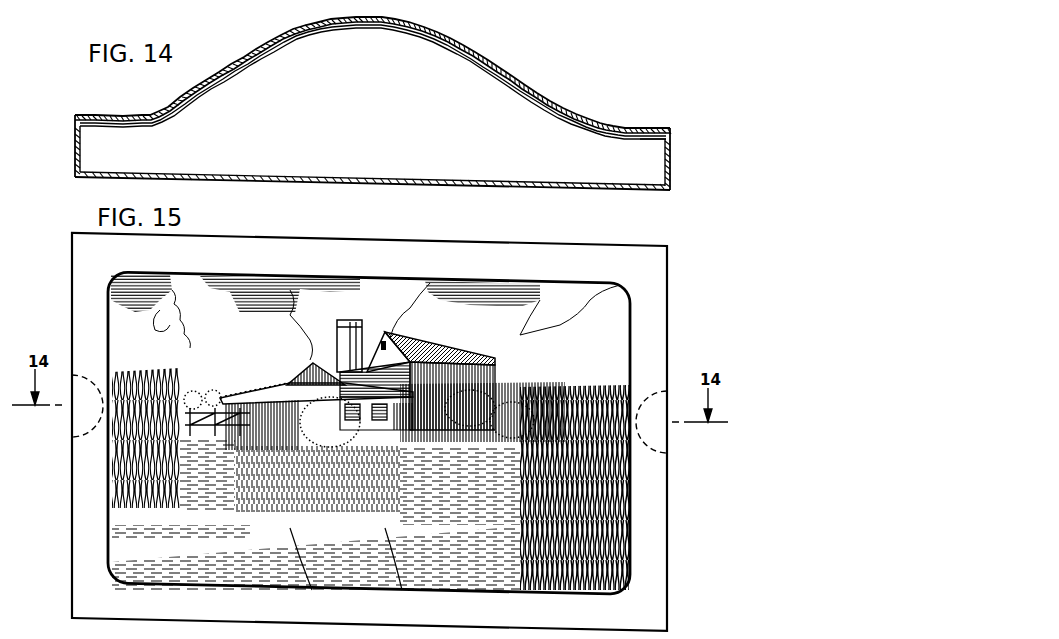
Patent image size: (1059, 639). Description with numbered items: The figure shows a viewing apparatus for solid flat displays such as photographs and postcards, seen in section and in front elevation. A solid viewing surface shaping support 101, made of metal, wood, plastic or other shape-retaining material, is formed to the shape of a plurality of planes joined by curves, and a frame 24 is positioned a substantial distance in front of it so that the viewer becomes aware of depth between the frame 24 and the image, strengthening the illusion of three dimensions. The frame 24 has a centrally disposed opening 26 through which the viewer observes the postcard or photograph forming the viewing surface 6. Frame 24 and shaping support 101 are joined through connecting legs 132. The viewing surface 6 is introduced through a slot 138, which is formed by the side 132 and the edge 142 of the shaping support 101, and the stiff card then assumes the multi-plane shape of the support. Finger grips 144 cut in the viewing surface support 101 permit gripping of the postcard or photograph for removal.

In FIG. 14, the viewing surface 6 is at (531, 96).
In FIG. 15, the viewing surface 6 is at (568, 293).
In FIG. 14, the frame 24 is at (653, 190).
In FIG. 15, the frame 24 is at (650, 273).
In FIG. 14, the centrally disposed opening 26 is at (507, 189).
In FIG. 14, the viewing surface shaping support 101 is at (510, 63).
In FIG. 14, the connecting legs 132 is at (673, 152).
In FIG. 14, the slot 138 is at (672, 134).
In FIG. 14, the edge of viewing surface shaping support 142 is at (641, 127).
In FIG. 14, the finger grips 144 is at (656, 131).
In FIG. 15, the finger grips 144 is at (663, 452).